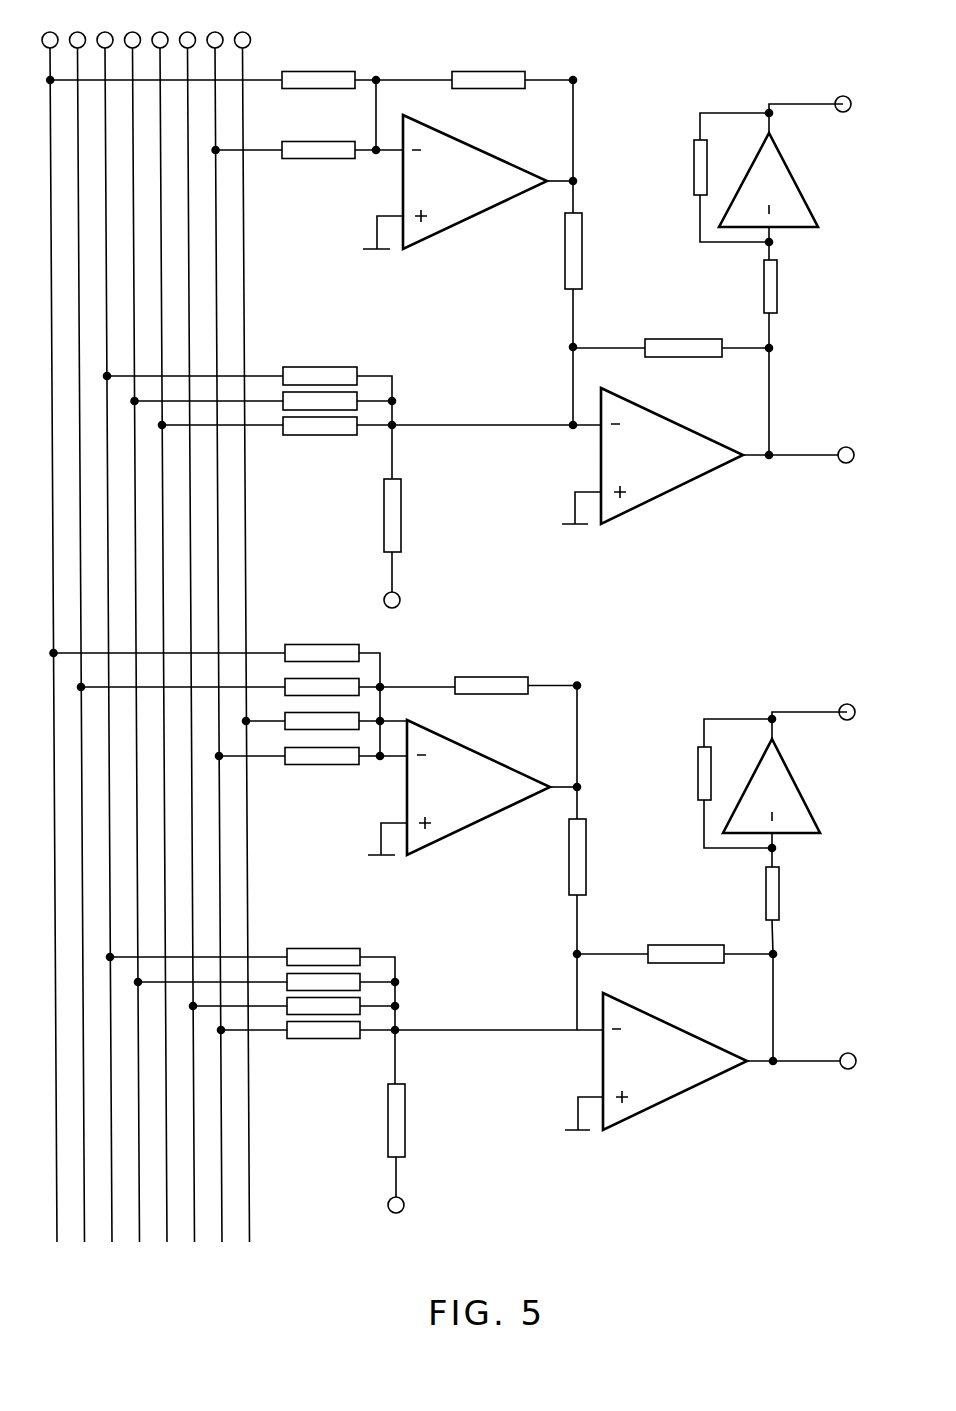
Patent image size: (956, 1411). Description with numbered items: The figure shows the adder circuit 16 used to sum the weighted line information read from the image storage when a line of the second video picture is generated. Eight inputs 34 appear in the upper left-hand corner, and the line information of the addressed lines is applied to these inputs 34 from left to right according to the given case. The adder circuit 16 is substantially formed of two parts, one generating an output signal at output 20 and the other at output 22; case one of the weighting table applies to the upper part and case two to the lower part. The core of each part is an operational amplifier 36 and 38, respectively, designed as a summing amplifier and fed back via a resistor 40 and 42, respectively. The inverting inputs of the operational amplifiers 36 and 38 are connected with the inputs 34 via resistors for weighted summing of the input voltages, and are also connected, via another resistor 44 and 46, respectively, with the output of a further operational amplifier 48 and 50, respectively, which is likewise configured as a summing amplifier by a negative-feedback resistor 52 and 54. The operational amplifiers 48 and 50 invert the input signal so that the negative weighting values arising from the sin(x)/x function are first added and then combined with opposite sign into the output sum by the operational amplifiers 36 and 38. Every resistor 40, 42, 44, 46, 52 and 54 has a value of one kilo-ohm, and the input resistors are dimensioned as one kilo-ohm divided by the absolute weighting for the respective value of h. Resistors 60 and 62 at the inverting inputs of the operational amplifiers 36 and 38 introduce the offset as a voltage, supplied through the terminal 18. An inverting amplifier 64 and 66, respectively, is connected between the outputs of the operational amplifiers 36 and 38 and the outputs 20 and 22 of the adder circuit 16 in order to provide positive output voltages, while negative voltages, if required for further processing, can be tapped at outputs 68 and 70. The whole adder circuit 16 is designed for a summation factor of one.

The adder circuit 16 is at (603, 1186).
The reference voltage terminal 18 is at (400, 597).
The output 20 is at (843, 112).
The output 22 is at (847, 720).
The inputs 34 is at (249, 37).
The operational amplifier 36 is at (678, 462).
The operational amplifier 38 is at (680, 1068).
The resistor 40 is at (680, 339).
The resistor 42 is at (672, 945).
The resistor 44 is at (582, 236).
The resistor 46 is at (586, 840).
The operational amplifier 48 is at (473, 190).
The operational amplifier 50 is at (478, 795).
The negative-feedback resistor 52 is at (492, 72).
The negative-feedback resistor 54 is at (490, 677).
The resistor 60 is at (398, 515).
The resistor 62 is at (400, 1120).
The inverting amplifier 64 is at (770, 287).
The inverting amplifier 66 is at (785, 825).
The output 68 is at (848, 447).
The output 70 is at (850, 1053).